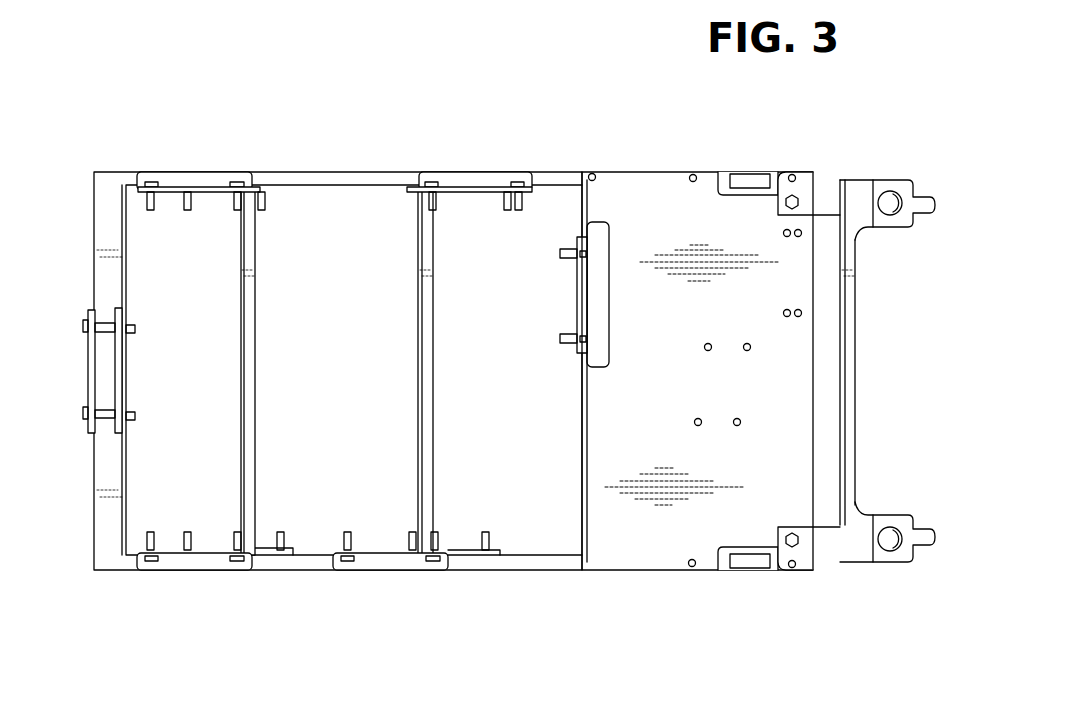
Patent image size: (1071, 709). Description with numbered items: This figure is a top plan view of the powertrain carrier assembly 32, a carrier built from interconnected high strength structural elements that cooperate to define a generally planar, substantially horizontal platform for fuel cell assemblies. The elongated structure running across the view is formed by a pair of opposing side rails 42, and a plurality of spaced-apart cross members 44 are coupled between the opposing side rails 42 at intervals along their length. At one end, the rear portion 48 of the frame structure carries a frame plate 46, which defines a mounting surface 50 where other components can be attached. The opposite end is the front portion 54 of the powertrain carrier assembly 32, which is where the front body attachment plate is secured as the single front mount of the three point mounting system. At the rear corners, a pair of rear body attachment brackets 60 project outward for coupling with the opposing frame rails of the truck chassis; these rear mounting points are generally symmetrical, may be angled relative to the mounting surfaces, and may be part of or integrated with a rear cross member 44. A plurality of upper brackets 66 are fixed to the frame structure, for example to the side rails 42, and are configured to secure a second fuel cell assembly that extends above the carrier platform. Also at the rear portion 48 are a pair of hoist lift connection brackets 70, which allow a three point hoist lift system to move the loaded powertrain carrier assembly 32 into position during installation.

The powertrain carrier assembly 32 is at (866, 118).
The side rails 42 is at (349, 170).
The cross members 44 is at (113, 282).
The frame plate 46 is at (652, 188).
The rear portion 48 is at (732, 604).
The mounting surface 50 is at (653, 432).
The front portion 54 is at (112, 596).
The rear body attachment brackets 60 is at (935, 172).
The upper brackets 66 is at (206, 178).
The hoist lift connection brackets 70 is at (749, 170).